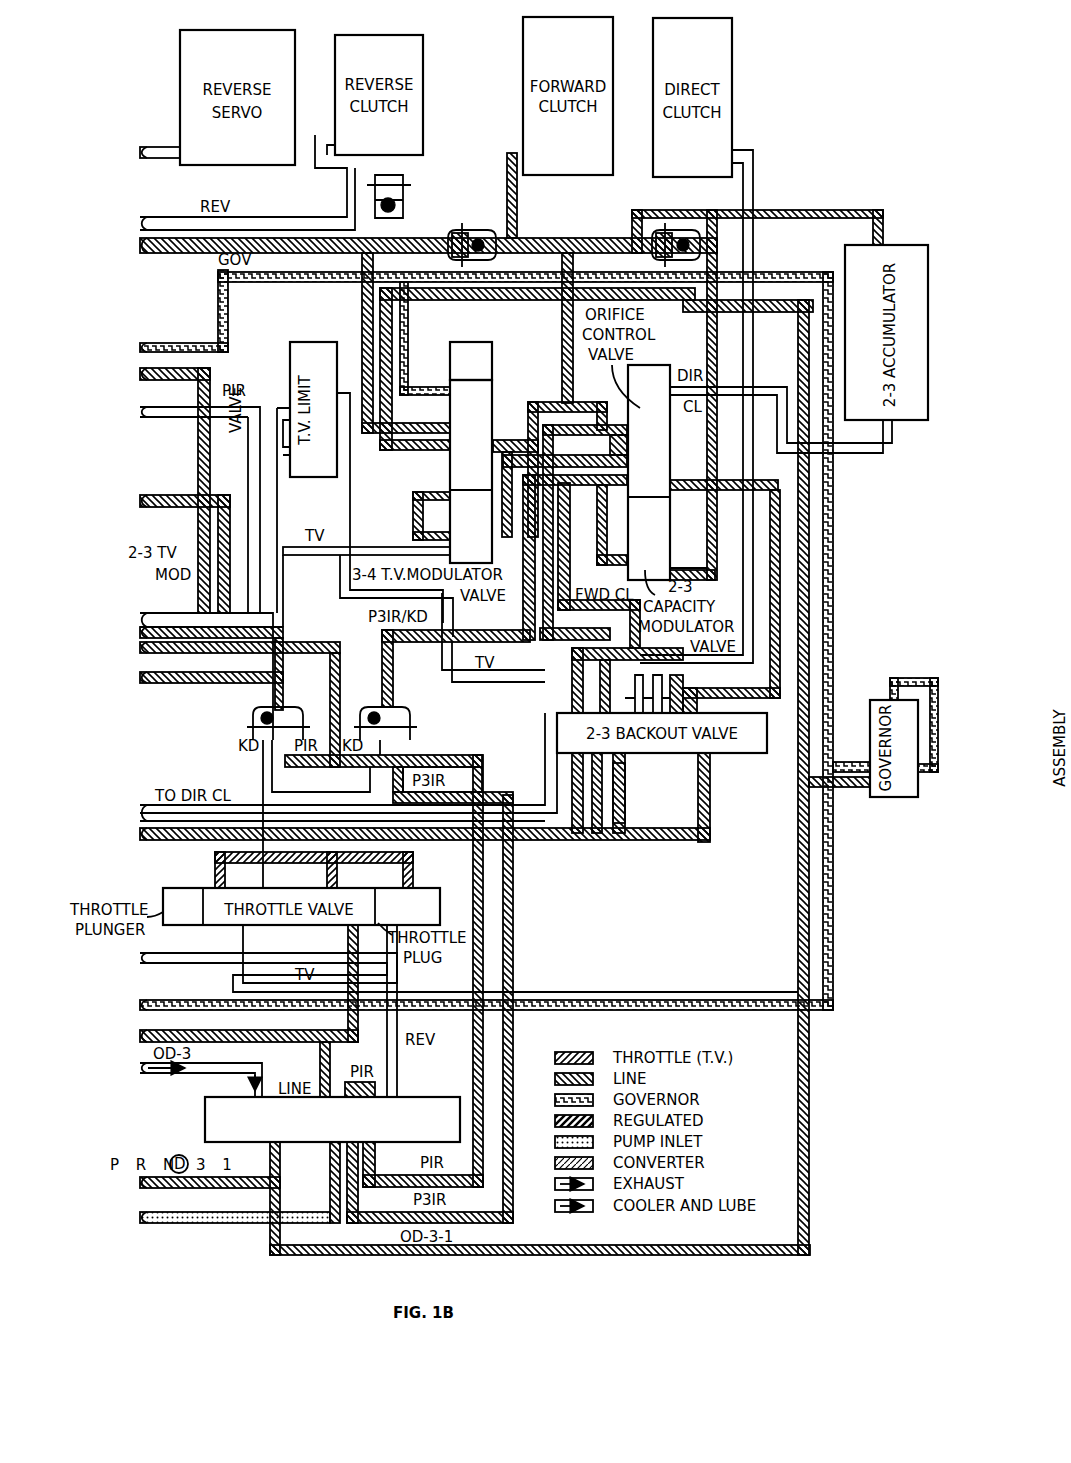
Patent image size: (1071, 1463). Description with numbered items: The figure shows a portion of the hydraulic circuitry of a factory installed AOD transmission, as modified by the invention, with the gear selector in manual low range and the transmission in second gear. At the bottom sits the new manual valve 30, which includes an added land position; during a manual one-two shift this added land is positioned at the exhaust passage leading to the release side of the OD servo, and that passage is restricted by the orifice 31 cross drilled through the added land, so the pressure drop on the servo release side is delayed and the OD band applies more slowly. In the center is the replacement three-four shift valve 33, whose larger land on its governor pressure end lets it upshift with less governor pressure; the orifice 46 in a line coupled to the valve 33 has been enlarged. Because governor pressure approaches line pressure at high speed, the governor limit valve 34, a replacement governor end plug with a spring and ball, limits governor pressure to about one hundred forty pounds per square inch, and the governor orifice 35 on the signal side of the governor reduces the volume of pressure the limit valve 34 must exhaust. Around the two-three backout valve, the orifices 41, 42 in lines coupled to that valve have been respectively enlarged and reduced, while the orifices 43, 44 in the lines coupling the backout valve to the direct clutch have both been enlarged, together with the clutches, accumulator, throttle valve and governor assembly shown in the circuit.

The manual valve 30 is at (332, 1119).
The orifice 31 is at (247, 1095).
The 3-4 shift valve 33 is at (471, 471).
The governor limit valve 34 is at (471, 361).
The governor orifice 35 is at (836, 593).
The orifice 41 is at (618, 790).
The orifice 42 is at (576, 790).
The orifice 43 is at (618, 692).
The orifice 44 is at (674, 690).
The orifice 46 is at (420, 455).